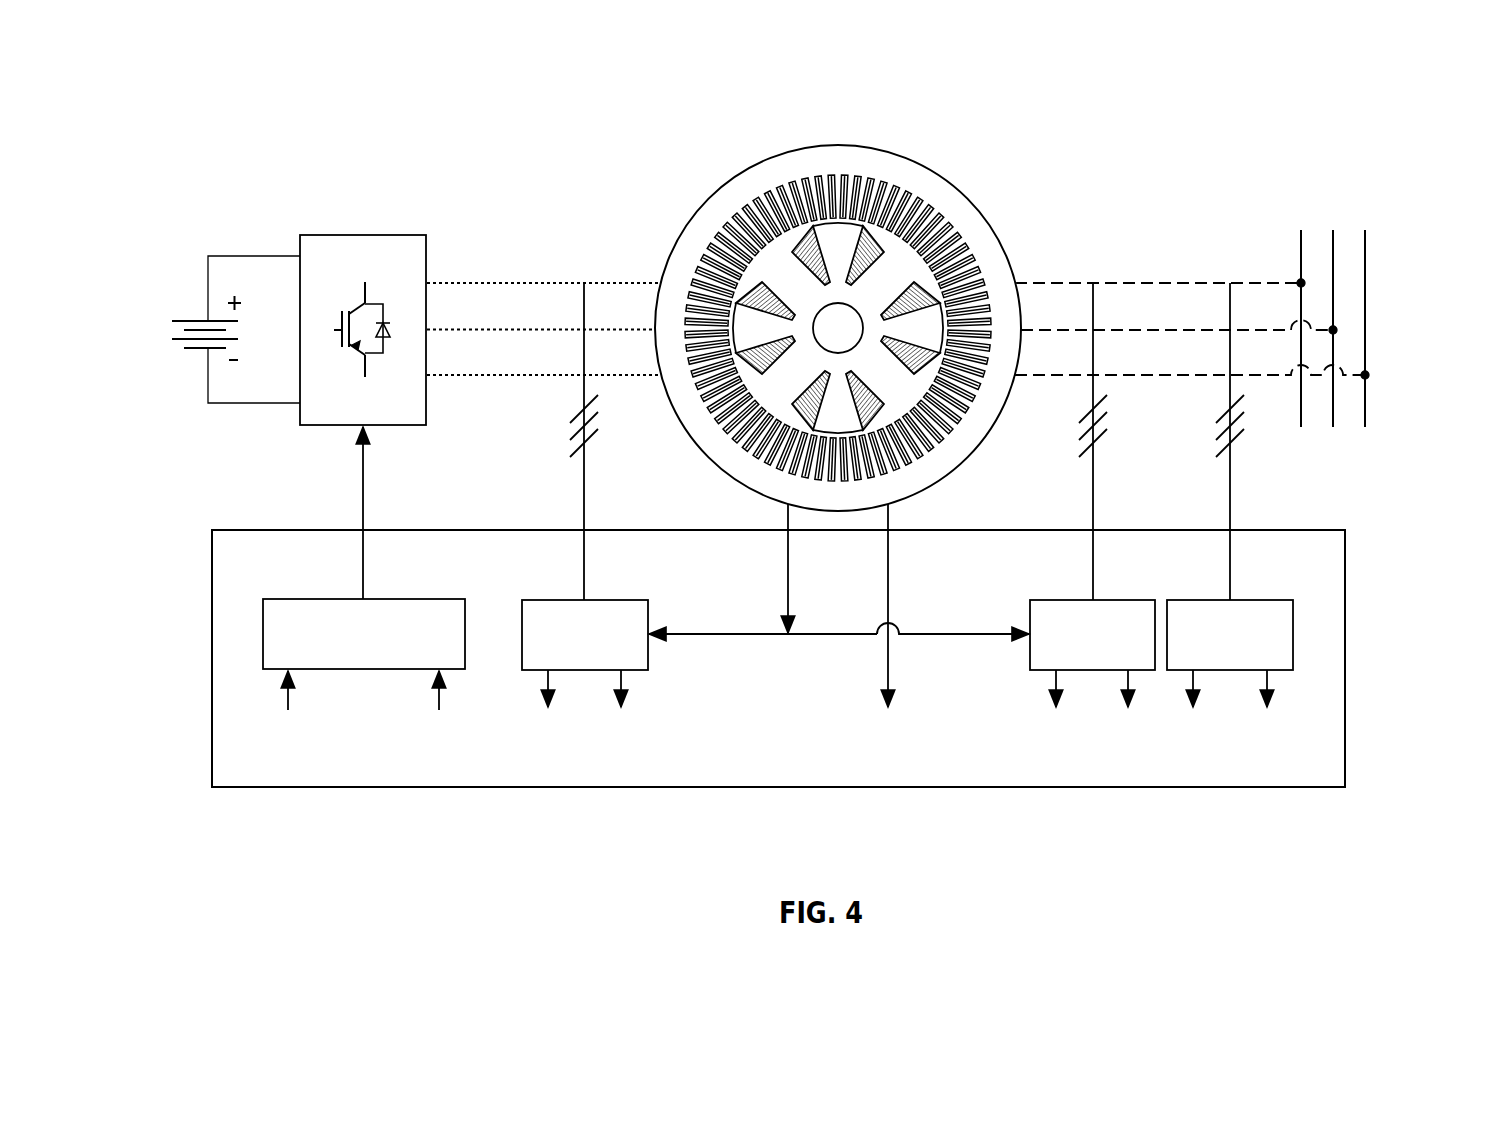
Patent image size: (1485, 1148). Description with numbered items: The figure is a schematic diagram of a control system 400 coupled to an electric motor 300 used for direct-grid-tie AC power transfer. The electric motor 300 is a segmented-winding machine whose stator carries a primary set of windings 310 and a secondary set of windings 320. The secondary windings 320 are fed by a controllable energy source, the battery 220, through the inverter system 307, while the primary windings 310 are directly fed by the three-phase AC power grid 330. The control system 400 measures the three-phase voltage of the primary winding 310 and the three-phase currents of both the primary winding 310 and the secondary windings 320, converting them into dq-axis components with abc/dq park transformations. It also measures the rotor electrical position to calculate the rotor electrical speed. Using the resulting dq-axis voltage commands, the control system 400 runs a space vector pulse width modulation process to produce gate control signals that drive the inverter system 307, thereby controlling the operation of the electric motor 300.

The battery 220 is at (178, 281).
The inverter system 307 is at (365, 235).
The secondary set of windings 320 is at (543, 250).
The electric motor 300 is at (838, 145).
The primary set of windings 310 is at (1160, 250).
The AC power grid 330 is at (1382, 331).
The control system 400 is at (779, 788).